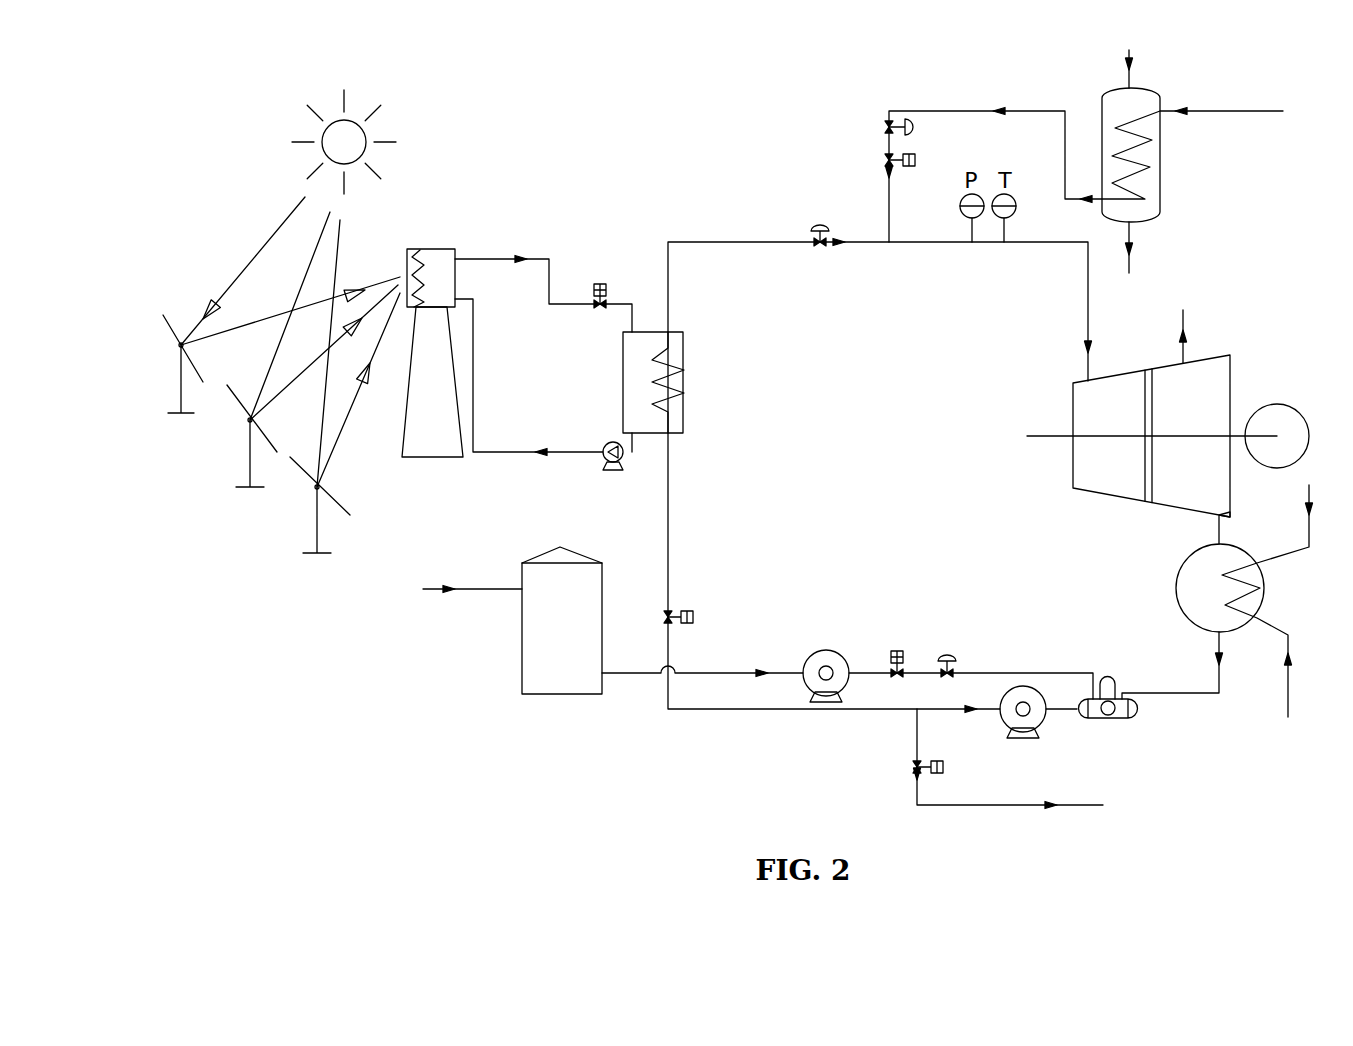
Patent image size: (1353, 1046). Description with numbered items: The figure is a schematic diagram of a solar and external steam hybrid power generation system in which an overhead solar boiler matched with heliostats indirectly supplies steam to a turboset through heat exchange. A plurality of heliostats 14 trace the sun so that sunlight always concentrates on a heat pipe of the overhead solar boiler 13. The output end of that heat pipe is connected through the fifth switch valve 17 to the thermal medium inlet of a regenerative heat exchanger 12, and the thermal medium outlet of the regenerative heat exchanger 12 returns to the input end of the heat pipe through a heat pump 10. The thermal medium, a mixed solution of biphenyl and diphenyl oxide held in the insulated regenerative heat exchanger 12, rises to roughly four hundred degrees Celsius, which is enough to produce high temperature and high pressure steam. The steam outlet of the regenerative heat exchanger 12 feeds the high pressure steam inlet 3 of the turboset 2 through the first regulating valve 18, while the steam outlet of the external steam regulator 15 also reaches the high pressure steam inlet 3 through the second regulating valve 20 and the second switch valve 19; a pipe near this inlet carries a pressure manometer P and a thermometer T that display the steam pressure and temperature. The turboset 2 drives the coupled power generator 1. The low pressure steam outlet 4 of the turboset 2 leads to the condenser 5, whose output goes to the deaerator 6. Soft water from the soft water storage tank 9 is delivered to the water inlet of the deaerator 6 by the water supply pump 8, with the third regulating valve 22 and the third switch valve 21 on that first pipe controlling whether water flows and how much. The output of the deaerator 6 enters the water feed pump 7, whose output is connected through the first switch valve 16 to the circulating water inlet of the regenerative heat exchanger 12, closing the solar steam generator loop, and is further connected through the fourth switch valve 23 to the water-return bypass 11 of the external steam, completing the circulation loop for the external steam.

The power generator 1 is at (1305, 447).
The turboset 2 is at (1137, 413).
The high pressure steam inlet 3 is at (1085, 381).
The low pressure steam outlet 4 is at (1228, 512).
The condenser 5 is at (1187, 604).
The deaerator 6 is at (1122, 716).
The water feed pump 7 is at (1036, 718).
The water supply pump 8 is at (826, 652).
The soft water storage tank 9 is at (543, 632).
The heat pump 10 is at (623, 459).
The water-return bypass 11 is at (1029, 802).
The regenerative heat exchanger 12 is at (622, 337).
The overhead solar boiler 13 is at (418, 247).
The heliostats 14 is at (309, 484).
The external steam regulator 15 is at (1157, 177).
The first switch valve 16 is at (695, 615).
The fifth switch valve 17 is at (598, 288).
The first regulating valve 18 is at (815, 218).
The second switch valve 19 is at (913, 163).
The second regulating valve 20 is at (913, 131).
The third switch valve 21 is at (896, 651).
The third regulating valve 22 is at (939, 651).
The fourth switch valve 23 is at (945, 769).